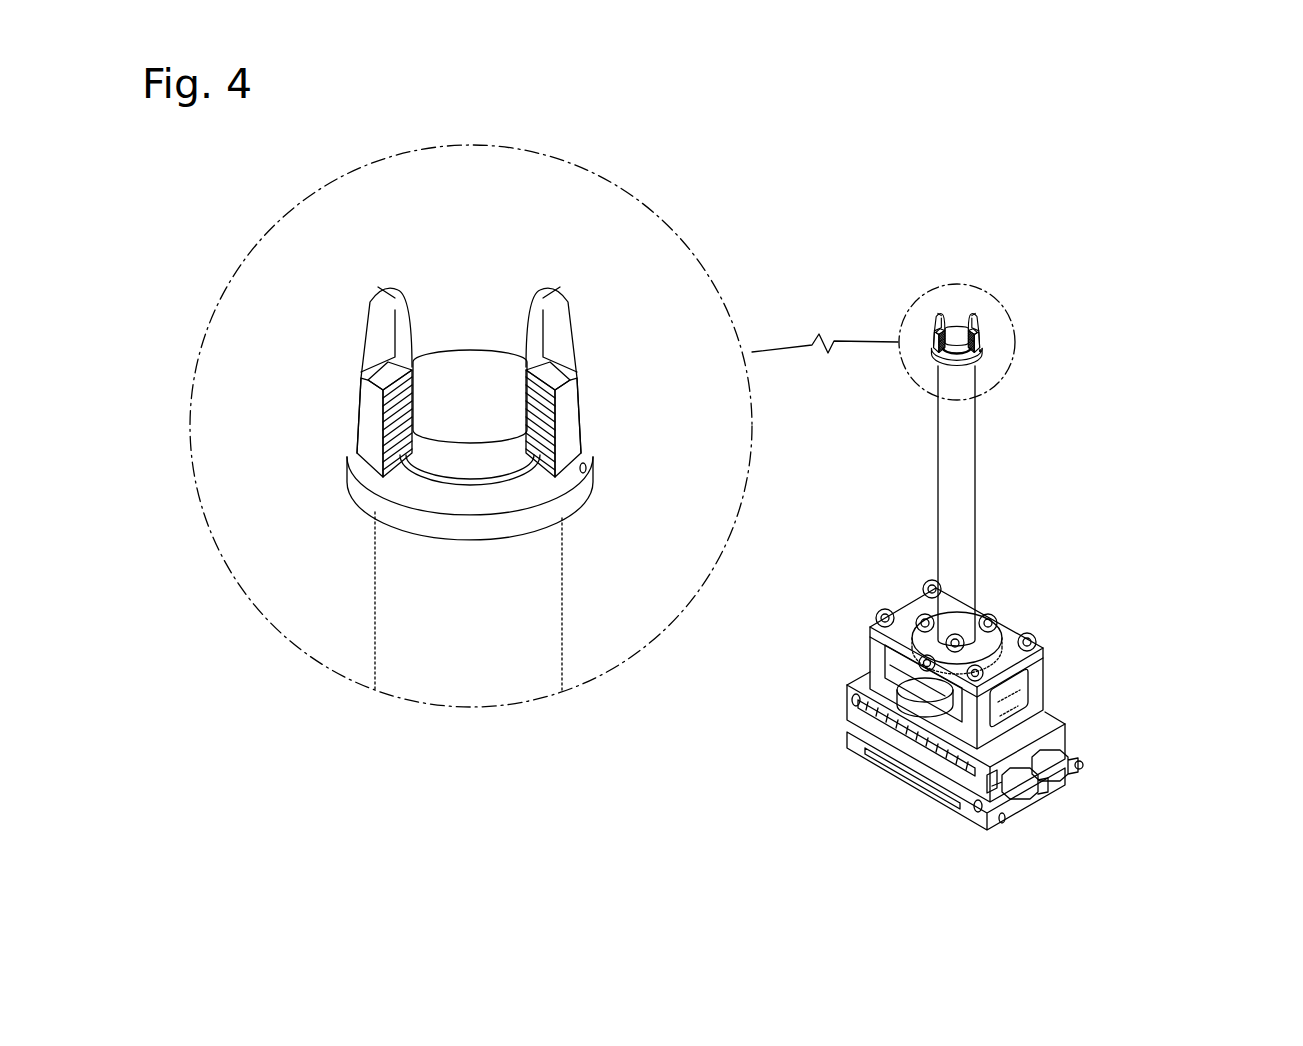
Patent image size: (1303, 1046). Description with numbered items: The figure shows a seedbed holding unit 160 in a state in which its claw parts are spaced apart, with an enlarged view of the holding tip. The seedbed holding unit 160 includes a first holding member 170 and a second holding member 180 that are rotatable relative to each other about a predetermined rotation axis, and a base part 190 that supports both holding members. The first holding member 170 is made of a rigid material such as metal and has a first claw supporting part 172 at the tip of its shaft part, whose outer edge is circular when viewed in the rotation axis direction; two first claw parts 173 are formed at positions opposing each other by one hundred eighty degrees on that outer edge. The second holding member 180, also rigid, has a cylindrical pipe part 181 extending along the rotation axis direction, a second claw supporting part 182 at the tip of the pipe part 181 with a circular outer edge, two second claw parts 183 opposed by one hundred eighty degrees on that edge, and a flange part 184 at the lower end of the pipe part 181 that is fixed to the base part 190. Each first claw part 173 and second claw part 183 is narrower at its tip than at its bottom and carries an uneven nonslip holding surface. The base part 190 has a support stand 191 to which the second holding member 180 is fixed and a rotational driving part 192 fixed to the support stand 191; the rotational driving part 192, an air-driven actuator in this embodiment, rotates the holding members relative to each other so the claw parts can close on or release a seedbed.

The seedbed holding unit 160 is at (1156, 281).
The first holding member 170 is at (445, 351).
The first claw supporting part 172 is at (470, 374).
The first claw part 173 is at (553, 322).
The second holding member 180 is at (352, 494).
The pipe part 181 is at (967, 474).
The second claw supporting part 182 is at (403, 512).
The second claw part 183 is at (381, 315).
The flange part 184 is at (981, 612).
The base part 190 is at (1188, 625).
The support stand 191 is at (1036, 665).
The rotational driving part 192 is at (1048, 760).